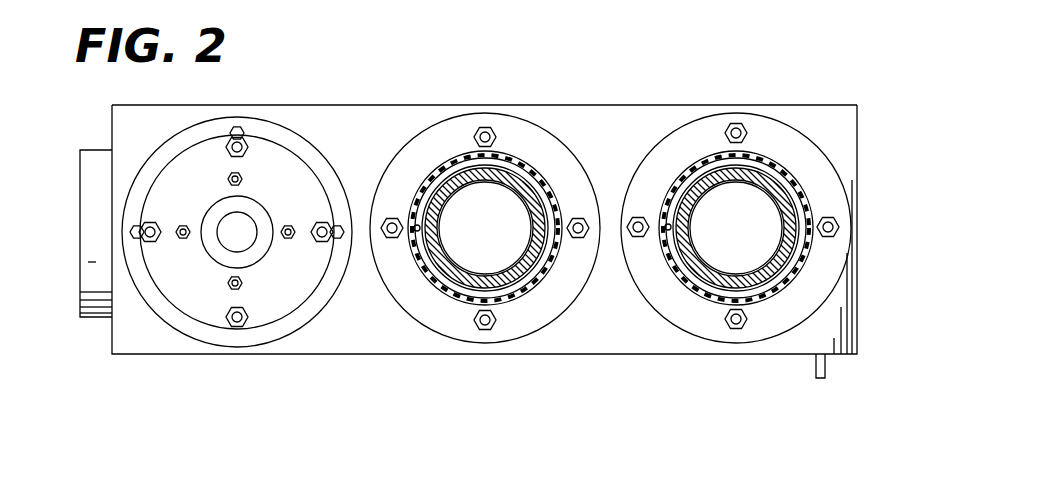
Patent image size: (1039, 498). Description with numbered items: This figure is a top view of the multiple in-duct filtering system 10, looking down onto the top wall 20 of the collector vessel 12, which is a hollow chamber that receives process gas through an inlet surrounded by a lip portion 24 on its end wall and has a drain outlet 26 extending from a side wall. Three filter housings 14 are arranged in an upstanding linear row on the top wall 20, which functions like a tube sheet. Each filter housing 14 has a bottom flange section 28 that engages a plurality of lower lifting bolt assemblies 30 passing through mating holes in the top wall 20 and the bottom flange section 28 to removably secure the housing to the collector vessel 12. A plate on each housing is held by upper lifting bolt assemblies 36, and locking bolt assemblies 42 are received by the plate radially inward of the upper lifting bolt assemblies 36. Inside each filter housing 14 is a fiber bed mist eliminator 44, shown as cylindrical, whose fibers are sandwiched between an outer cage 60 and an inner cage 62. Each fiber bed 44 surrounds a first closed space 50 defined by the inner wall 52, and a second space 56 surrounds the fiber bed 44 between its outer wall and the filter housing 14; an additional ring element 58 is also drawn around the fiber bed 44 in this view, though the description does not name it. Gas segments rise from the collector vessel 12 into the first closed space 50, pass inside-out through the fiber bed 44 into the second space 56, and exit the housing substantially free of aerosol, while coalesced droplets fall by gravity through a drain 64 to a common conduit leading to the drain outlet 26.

The multiple in-duct filtering system 10 is at (768, 44).
The collector vessel 12 is at (565, 105).
The filter housings 14 is at (650, 344).
The top wall 20 is at (313, 118).
The lip portion 24 is at (92, 157).
The drain outlet 26 is at (828, 366).
The bottom flange section 28 is at (170, 316).
The lower lifting bolt assemblies 30 is at (240, 328).
The upper lifting bolt assemblies 36 is at (237, 232).
The locking bolt assemblies 42 is at (228, 178).
The fiber bed mist eliminators 44 is at (460, 166).
The first closed space 50 is at (610, 228).
The inner wall 52 is at (452, 222).
The second space 56 is at (420, 258).
The outer ring 58 is at (522, 268).
The outer cage 60 is at (445, 283).
The inner cage 62 is at (458, 278).
The drain 64 is at (518, 169).